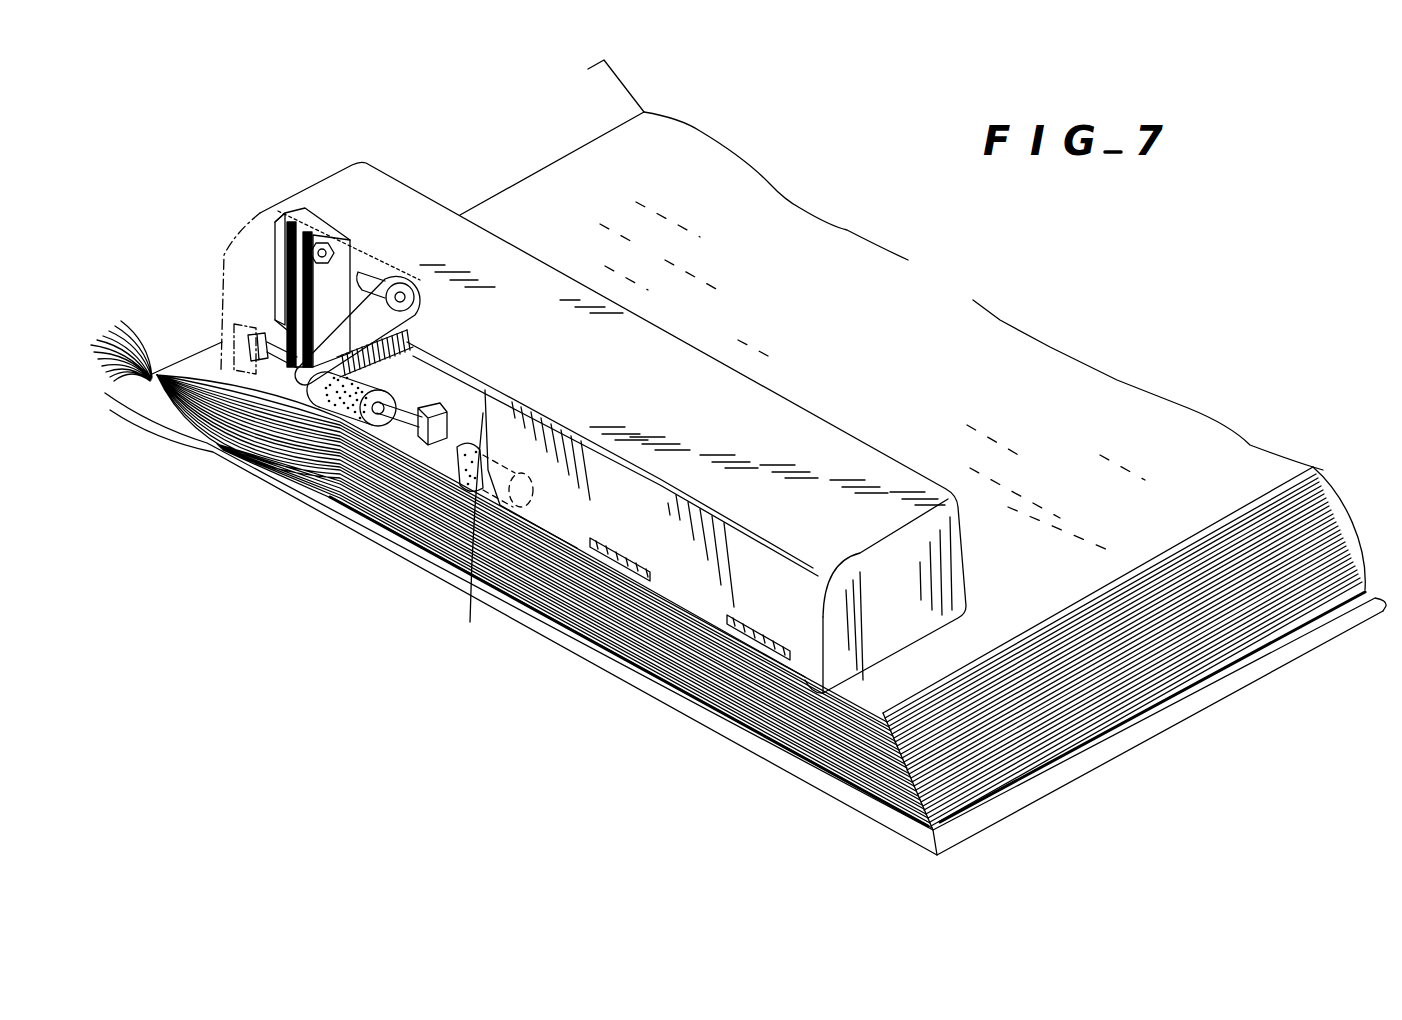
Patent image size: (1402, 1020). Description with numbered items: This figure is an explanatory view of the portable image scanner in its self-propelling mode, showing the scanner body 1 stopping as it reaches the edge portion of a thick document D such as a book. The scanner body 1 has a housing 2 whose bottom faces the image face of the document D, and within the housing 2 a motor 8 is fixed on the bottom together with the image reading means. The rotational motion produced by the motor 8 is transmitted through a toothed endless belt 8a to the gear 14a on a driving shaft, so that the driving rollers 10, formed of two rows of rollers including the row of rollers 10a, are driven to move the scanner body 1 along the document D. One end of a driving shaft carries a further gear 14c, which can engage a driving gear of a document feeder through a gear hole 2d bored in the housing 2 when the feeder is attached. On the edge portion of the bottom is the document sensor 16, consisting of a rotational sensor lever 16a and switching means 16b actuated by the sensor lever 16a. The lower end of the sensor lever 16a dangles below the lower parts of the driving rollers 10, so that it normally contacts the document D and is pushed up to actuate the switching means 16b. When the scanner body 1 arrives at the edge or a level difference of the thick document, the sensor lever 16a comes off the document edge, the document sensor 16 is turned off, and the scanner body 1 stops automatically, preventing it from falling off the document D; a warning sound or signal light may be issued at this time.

The scanner body 1 is at (577, 282).
The housing 2 is at (447, 243).
The gear hole 2d is at (232, 343).
The motor 8 is at (273, 263).
The toothed endless belt 8a is at (353, 307).
The driving rollers 10 is at (305, 467).
The roller 10a is at (593, 570).
The gear 14a is at (340, 410).
The gear 14c is at (260, 338).
The document sensor 16 is at (400, 524).
The sensor lever 16a is at (423, 440).
The switching means 16b is at (450, 462).
The document D is at (1145, 521).